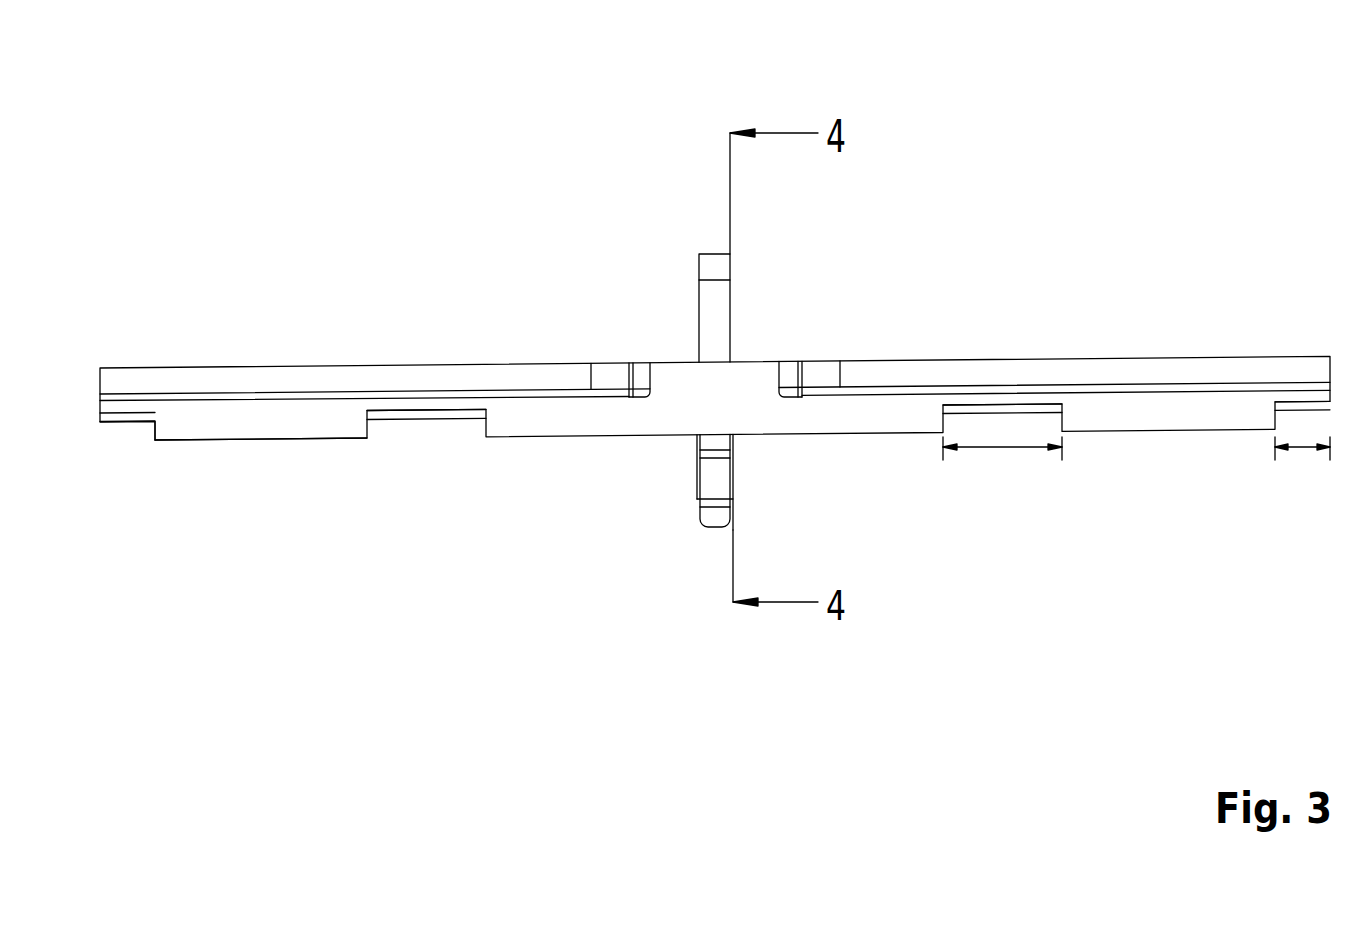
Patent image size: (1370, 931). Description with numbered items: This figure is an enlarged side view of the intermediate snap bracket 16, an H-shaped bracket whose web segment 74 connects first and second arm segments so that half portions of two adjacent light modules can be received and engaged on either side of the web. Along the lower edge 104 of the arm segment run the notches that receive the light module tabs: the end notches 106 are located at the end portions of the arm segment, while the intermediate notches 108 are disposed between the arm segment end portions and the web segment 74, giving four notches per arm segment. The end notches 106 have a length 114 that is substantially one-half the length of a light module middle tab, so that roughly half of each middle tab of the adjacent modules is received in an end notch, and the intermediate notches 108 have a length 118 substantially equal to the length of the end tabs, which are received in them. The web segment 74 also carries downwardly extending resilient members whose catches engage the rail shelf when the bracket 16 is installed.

The intermediate snap bracket 16 is at (362, 118).
The web segment 74 is at (704, 318).
The lower edge 104 is at (224, 441).
The end notch 106 is at (115, 426).
The intermediate notch 108 is at (418, 430).
The length of end notch 114 is at (1292, 462).
The length of intermediate notch 118 is at (1000, 455).